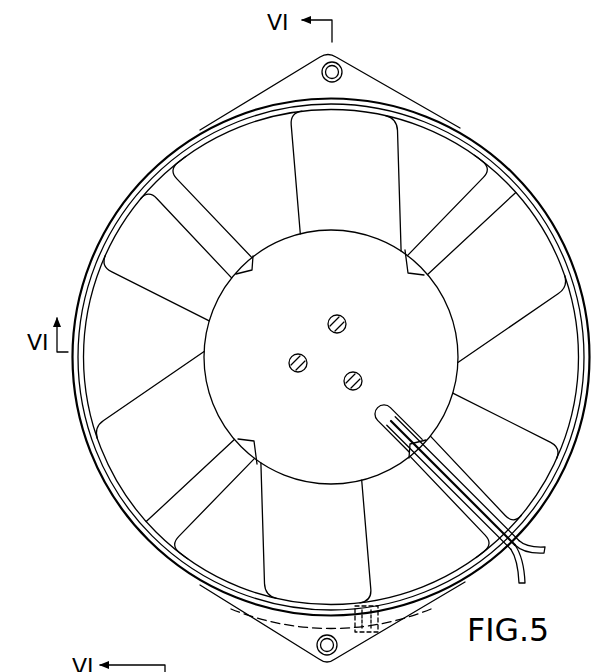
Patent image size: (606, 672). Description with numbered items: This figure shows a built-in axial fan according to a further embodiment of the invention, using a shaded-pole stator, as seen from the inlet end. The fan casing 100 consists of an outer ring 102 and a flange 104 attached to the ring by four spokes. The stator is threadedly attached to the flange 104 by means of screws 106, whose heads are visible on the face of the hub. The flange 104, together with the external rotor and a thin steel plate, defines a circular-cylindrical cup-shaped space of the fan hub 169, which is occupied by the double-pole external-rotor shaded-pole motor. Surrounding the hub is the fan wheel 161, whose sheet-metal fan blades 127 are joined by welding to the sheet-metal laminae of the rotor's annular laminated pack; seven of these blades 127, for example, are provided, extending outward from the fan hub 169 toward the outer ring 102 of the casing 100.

The fan casing 100 is at (464, 126).
The outer ring 102 is at (490, 157).
The flange 104 is at (417, 386).
The screws 106 is at (348, 319).
The sheet-metal fan blades 127 is at (354, 171).
The fan wheel 161 is at (149, 365).
The fan hub 169 is at (289, 229).